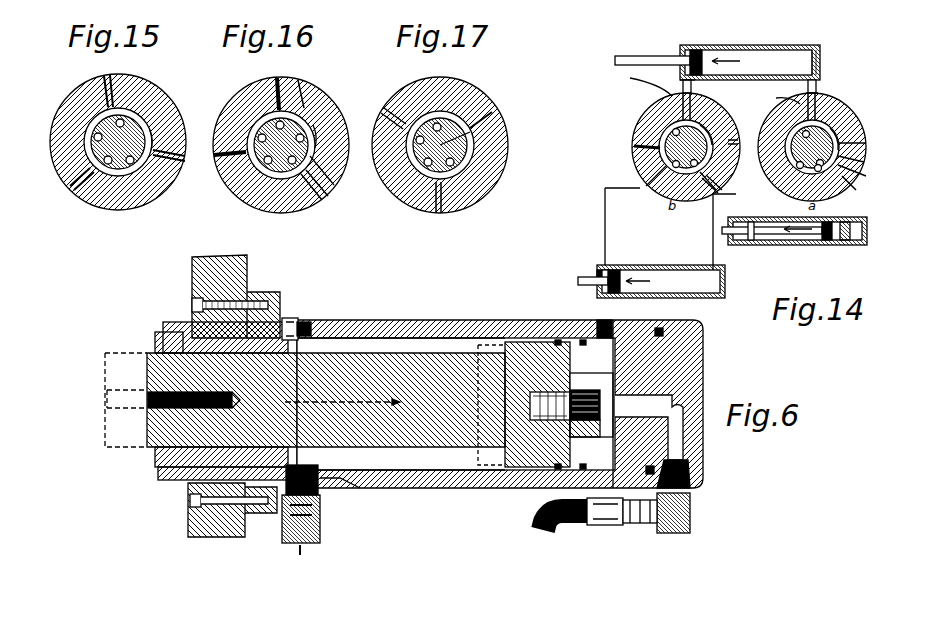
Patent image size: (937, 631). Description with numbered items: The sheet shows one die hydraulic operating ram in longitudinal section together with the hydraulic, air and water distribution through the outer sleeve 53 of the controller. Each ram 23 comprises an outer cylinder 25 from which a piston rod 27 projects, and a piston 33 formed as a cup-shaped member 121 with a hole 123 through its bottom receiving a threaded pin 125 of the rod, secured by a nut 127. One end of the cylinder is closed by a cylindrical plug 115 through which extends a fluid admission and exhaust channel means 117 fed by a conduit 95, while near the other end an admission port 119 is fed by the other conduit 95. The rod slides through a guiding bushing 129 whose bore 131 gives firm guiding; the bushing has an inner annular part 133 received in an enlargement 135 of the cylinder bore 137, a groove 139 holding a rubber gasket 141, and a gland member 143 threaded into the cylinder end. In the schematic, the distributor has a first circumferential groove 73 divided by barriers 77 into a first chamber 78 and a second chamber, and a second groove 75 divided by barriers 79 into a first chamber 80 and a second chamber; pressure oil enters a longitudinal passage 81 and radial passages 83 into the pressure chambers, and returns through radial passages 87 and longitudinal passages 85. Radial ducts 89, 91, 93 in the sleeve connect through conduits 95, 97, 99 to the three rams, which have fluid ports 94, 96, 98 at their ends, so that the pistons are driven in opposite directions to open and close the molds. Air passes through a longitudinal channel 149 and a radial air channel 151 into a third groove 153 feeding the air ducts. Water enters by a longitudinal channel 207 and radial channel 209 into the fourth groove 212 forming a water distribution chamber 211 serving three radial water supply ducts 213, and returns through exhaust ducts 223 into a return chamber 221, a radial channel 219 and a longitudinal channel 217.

In FIG. 14, the ram 23 is at (742, 46).
In FIG. 6, the ram 23 is at (484, 314).
In FIG. 6, the outer cylinder 25 is at (445, 320).
In FIG. 6, the piston rod 27 is at (352, 353).
In FIG. 14, the piston 33 is at (696, 50).
In FIG. 16, the outer sleeve 53 is at (240, 92).
In FIG. 17, the outer sleeve 53 is at (506, 156).
In FIG. 14, the outer sleeve 53 is at (852, 108).
In FIG. 14, the first circumferential groove 73 is at (802, 136).
In FIG. 14, the second circumferential groove 75 is at (672, 134).
In FIG. 14, the barrier 77 is at (866, 140).
In FIG. 14, the first chamber 78 is at (720, 180).
In FIG. 14, the barrier 79 is at (692, 102).
In FIG. 14, the first chamber 80 is at (634, 150).
In FIG. 15, the longitudinal passage 81 is at (122, 124).
In FIG. 16, the longitudinal passage 81 is at (292, 118).
In FIG. 17, the longitudinal passage 81 is at (450, 116).
In FIG. 14, the longitudinal passage 81 is at (788, 132).
In FIG. 14, the radial passage 83 is at (716, 130).
In FIG. 15, the longitudinal passage 85 is at (106, 164).
In FIG. 16, the longitudinal passage 85 is at (267, 163).
In FIG. 17, the longitudinal passage 85 is at (426, 166).
In FIG. 14, the longitudinal passage 85 is at (812, 172).
In FIG. 14, the radial passage 87 is at (832, 160).
In FIG. 14, the radial duct 89 is at (782, 94).
In FIG. 14, the radial duct 91 is at (866, 176).
In FIG. 14, the radial duct 93 is at (796, 168).
In FIG. 14, the fluid port 94 is at (816, 78).
In FIG. 14, the conduit 95 is at (818, 90).
In FIG. 6, the conduit 95 is at (318, 508).
In FIG. 14, the fluid port 96 is at (852, 224).
In FIG. 14, the conduit 97 is at (734, 216).
In FIG. 14, the fluid port 98 is at (734, 270).
In FIG. 14, the conduit 99 is at (713, 240).
In FIG. 6, the cylindrical plug 115 is at (700, 468).
In FIG. 6, the fluid admission and exhaust channel means 117 is at (690, 436).
In FIG. 6, the admission port 119 is at (350, 490).
In FIG. 6, the cup-shaped member 121 is at (536, 342).
In FIG. 6, the hole 123 is at (540, 392).
In FIG. 6, the threaded pin 125 is at (588, 373).
In FIG. 6, the nut 127 is at (630, 328).
In FIG. 6, the guiding bushing 129 is at (144, 330).
In FIG. 6, the bore 131 is at (190, 500).
In FIG. 6, the inner annular part 133 is at (302, 322).
In FIG. 6, the enlargement 135 is at (288, 318).
In FIG. 6, the bore 137 is at (398, 338).
In FIG. 6, the groove 139 is at (252, 312).
In FIG. 6, the rubber gasket 141 is at (196, 298).
In FIG. 6, the gland member 143 is at (164, 330).
In FIG. 17, the longitudinal channel 149 is at (480, 118).
In FIG. 17, the radial air channel 151 is at (472, 130).
In FIG. 17, the third groove 153 is at (437, 112).
In FIG. 16, the longitudinal channel 207 is at (318, 124).
In FIG. 16, the radial channel 209 is at (334, 185).
In FIG. 16, the water distribution chamber 211 is at (275, 170).
In FIG. 16, the fourth groove 212 is at (278, 78).
In FIG. 16, the radial water supply duct 213 is at (306, 86).
In FIG. 15, the longitudinal channel 217 is at (92, 145).
In FIG. 15, the radial channel 219 is at (94, 137).
In FIG. 15, the exhaust or return chamber 221 is at (160, 138).
In FIG. 15, the water return or exhaust duct 223 is at (105, 85).